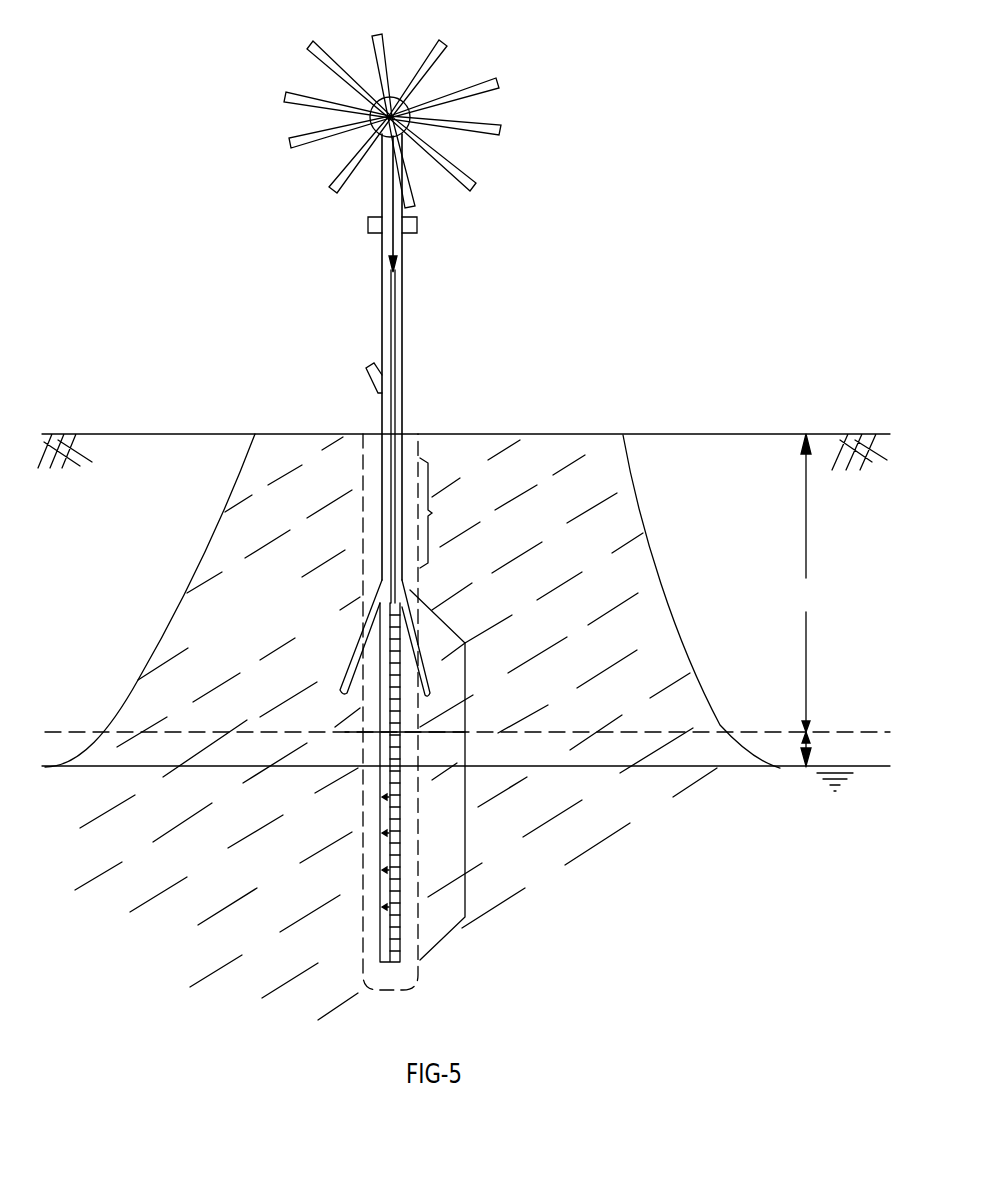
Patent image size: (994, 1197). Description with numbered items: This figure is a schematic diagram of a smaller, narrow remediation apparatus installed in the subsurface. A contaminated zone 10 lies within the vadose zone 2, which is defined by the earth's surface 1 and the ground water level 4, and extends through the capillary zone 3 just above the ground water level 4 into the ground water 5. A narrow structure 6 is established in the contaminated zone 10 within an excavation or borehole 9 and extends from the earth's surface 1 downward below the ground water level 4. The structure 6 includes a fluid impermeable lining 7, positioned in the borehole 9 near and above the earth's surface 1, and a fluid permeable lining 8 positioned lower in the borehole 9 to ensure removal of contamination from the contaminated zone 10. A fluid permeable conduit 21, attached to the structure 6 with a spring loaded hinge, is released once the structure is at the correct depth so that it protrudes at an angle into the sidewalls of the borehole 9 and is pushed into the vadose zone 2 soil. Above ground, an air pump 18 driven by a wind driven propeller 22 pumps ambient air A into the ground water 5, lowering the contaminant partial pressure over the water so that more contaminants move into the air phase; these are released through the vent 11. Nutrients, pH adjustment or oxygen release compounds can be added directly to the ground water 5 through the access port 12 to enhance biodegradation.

The earth's surface 1 is at (60, 428).
The vadose zone 2 is at (803, 583).
The capillary zone 3 is at (803, 744).
The ground water level 4 is at (834, 762).
The ground water 5 is at (585, 910).
The structure 6 is at (392, 502).
The fluid impermeable lining 7 is at (465, 743).
The fluid permeable lining 8 is at (436, 513).
The borehole 9 is at (407, 442).
The contaminated zone 10 is at (310, 555).
The vent 11 is at (418, 223).
The access port 12 is at (365, 378).
The air pump 18 is at (418, 93).
The fluid permeable conduit 21 is at (358, 644).
The wind driven propeller 22 is at (508, 125).
The ambient air A is at (383, 857).